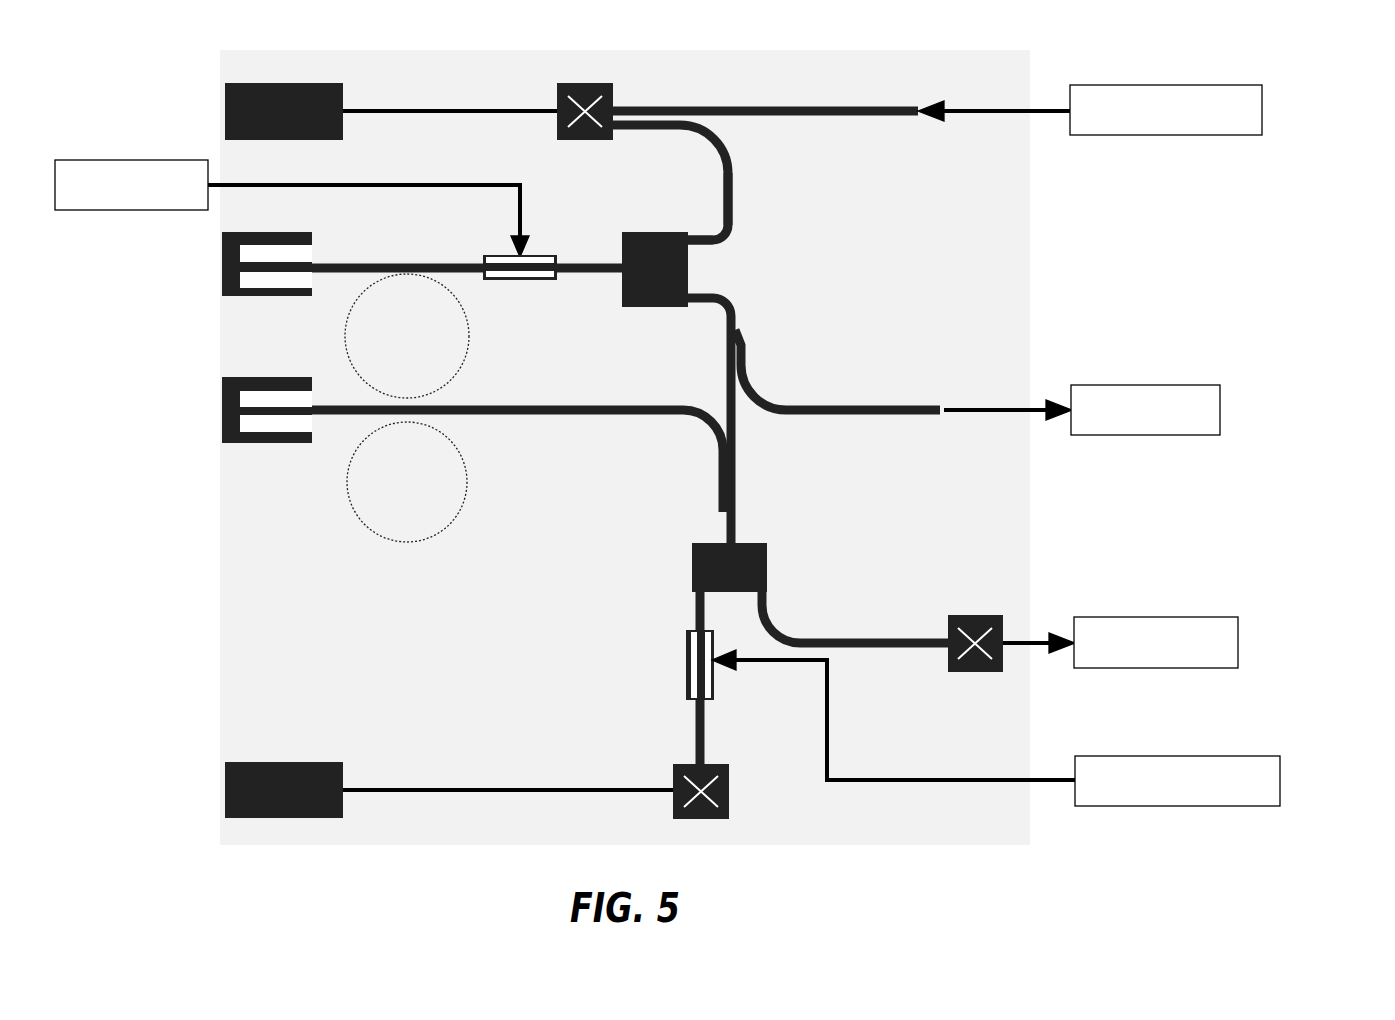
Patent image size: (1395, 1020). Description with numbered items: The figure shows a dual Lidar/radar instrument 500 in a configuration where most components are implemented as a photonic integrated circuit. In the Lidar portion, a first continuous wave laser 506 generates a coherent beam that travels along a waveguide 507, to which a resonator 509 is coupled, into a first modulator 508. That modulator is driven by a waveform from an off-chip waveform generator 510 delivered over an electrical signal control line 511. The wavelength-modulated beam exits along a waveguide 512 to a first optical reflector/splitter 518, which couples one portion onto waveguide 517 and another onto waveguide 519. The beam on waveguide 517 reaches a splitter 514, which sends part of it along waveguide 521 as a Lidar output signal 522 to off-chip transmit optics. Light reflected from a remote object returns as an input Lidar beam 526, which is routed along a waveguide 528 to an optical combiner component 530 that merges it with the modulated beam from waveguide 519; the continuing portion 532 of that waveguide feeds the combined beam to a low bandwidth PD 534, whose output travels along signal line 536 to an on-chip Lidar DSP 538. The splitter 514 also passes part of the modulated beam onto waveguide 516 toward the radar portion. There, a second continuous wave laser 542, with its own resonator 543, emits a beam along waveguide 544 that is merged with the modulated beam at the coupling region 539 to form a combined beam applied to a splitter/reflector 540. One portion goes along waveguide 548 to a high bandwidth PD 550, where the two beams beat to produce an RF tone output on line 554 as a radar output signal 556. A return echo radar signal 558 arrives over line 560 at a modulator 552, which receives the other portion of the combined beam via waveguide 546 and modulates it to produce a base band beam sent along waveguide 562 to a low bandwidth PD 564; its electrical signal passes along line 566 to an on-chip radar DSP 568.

The optical system 500 is at (1320, 80).
The first continuous wave laser 506 is at (291, 232).
The waveguide 507 is at (348, 268).
The first modulator 508 is at (536, 256).
The resonator 509 is at (457, 353).
The off-chip waveform generator 510 is at (118, 160).
The electrical signal control line 511 is at (371, 185).
The waveguide 512 is at (600, 262).
The splitter 514 is at (755, 364).
The waveguide 516 is at (720, 407).
The waveguide 517 is at (731, 328).
The first optical reflector/splitter 518 is at (710, 276).
The waveguide 519 is at (732, 192).
The waveguide 521 is at (845, 410).
The Lidar output signal 522 is at (1125, 385).
The input Lidar beam 526 is at (1113, 85).
The waveguide 528 is at (890, 108).
The optical combiner component 530 is at (674, 101).
The continuing portion of waveguide 532 is at (617, 122).
The low bandwidth PD 534 is at (614, 92).
The signal line 536 is at (441, 111).
The on-chip Lidar DSP 538 is at (291, 84).
The coupler 539 is at (744, 487).
The splitter/reflector 540 is at (775, 573).
The second continuous wave laser 542 is at (286, 378).
The resonator 543 is at (445, 518).
The waveguide 544 is at (548, 412).
The waveguide 546 is at (694, 612).
The waveguide 548 is at (786, 643).
The high bandwidth PD 550 is at (968, 672).
The modulator 552 is at (695, 686).
The line 554 is at (1041, 640).
The radar output signal 556 is at (1143, 617).
The return echo radar signal 558 is at (1185, 756).
The line 560 is at (896, 783).
The waveguide 562 is at (706, 724).
The low bandwidth PD 564 is at (722, 766).
The line 566 is at (455, 790).
The on-chip radar DSP 568 is at (300, 762).